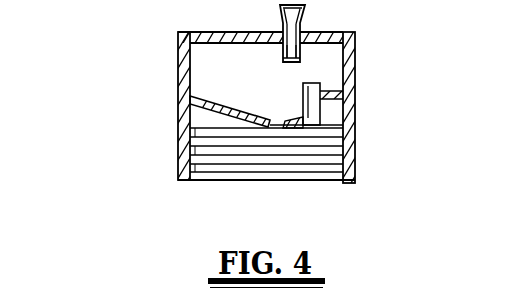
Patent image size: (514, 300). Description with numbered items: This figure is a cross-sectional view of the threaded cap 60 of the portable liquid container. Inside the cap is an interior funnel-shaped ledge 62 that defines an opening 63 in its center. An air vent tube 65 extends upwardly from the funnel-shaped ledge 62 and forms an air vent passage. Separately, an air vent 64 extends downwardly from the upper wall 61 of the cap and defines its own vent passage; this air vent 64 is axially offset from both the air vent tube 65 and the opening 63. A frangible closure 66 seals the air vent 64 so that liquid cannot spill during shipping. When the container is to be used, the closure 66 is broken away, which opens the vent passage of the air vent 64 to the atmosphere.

The threaded cap 60 is at (255, 117).
The upper wall 61 is at (346, 31).
The funnel-shaped ledge 62 is at (220, 113).
The opening 63 is at (272, 124).
The air vent 64 is at (300, 47).
The air vent tube 65 is at (343, 95).
The frangible closure 66 is at (305, 7).